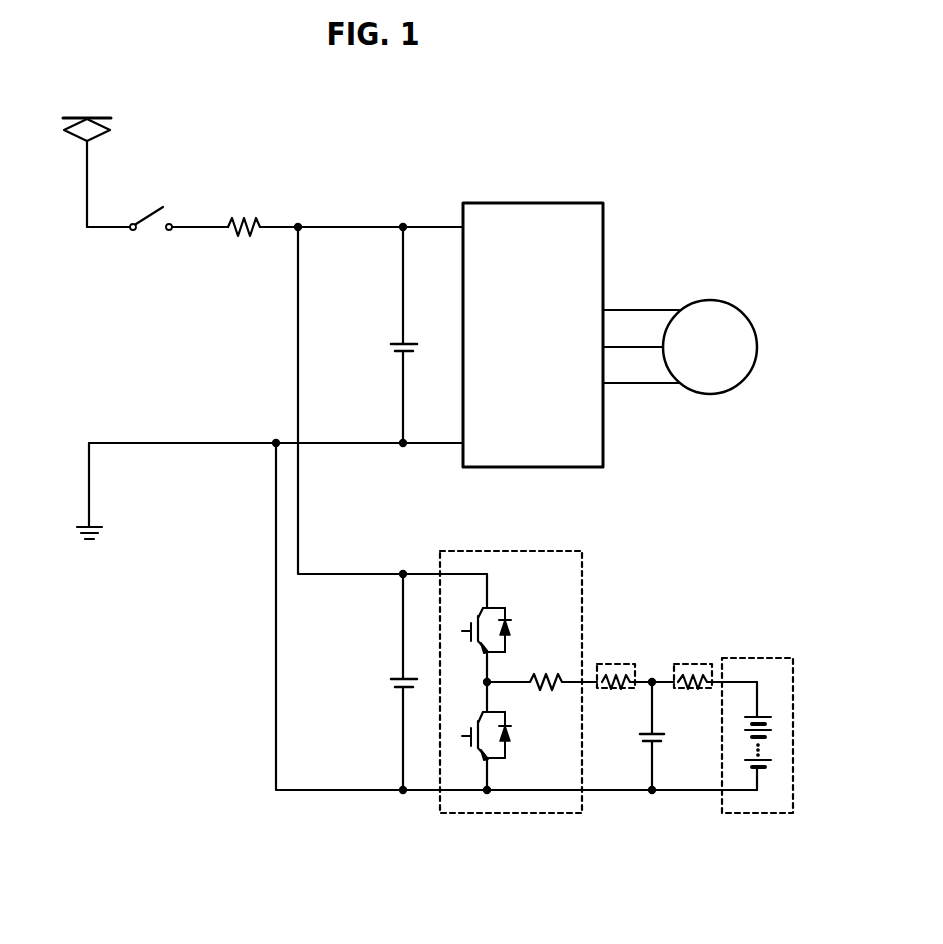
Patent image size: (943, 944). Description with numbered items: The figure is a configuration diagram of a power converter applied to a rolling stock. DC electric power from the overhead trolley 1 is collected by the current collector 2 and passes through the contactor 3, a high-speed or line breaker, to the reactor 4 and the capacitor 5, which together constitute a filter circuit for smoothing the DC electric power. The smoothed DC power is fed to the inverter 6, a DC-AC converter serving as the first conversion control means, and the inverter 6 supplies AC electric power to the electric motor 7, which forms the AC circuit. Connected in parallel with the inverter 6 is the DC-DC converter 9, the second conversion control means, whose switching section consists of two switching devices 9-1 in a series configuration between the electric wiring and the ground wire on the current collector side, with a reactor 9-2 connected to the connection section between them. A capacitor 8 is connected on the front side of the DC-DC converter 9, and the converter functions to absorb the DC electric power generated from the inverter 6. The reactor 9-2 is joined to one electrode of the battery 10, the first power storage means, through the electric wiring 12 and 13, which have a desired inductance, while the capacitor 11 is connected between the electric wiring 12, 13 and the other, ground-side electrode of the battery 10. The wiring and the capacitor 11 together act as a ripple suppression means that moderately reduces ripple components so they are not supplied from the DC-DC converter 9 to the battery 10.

The overhead trolley 1 is at (78, 112).
The current collector 2 is at (110, 130).
The contactor 3 is at (163, 207).
The reactor 4 is at (247, 220).
The capacitor 5 is at (403, 340).
The inverter 6 is at (603, 243).
The electric motor 7 is at (718, 300).
The capacitor 8 is at (405, 675).
The DC-DC converter 9 is at (535, 551).
The switching device 9-1 is at (495, 605).
The reactor 9-2 is at (545, 668).
The battery 10 is at (758, 658).
The capacitor 11 is at (664, 735).
The electric wiring 12 is at (617, 664).
The electric wiring 13 is at (698, 664).